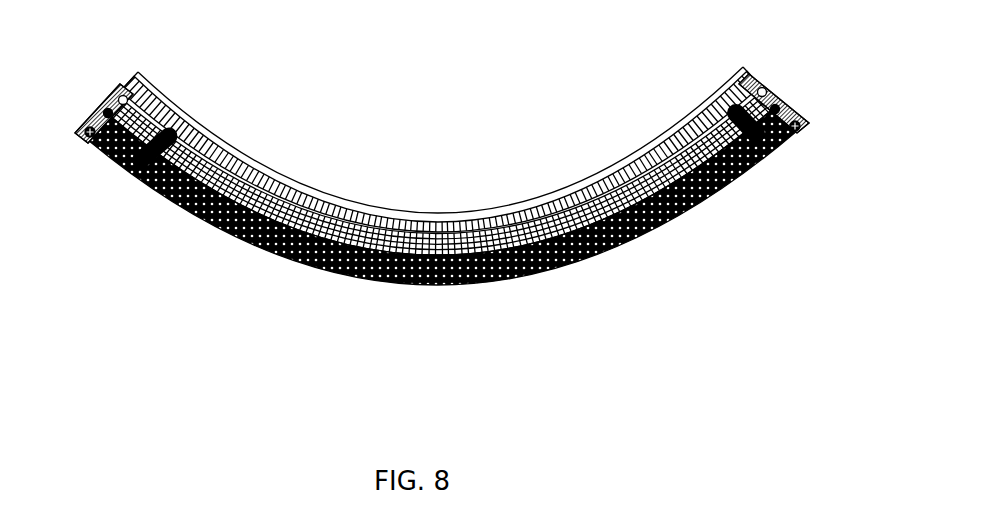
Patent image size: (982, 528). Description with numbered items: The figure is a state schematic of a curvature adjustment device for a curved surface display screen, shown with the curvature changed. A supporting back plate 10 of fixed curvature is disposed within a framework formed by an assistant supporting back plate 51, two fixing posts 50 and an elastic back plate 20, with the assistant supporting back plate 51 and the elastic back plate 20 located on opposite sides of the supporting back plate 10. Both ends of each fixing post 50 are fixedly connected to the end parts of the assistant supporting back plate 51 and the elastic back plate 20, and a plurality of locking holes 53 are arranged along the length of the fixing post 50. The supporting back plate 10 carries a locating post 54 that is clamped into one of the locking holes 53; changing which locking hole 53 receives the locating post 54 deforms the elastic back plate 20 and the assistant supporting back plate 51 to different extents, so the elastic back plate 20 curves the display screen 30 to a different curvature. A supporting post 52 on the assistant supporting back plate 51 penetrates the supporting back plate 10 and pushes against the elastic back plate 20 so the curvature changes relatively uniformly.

The supporting back plate 10 is at (648, 241).
The elastic back plate 20 is at (757, 72).
The display screen 30 is at (427, 212).
The fixing post 50 is at (805, 122).
The assistant supporting back plate 51 is at (497, 288).
The supporting post 52 is at (103, 152).
The locking hole 53 is at (119, 95).
The locating post 54 is at (104, 109).